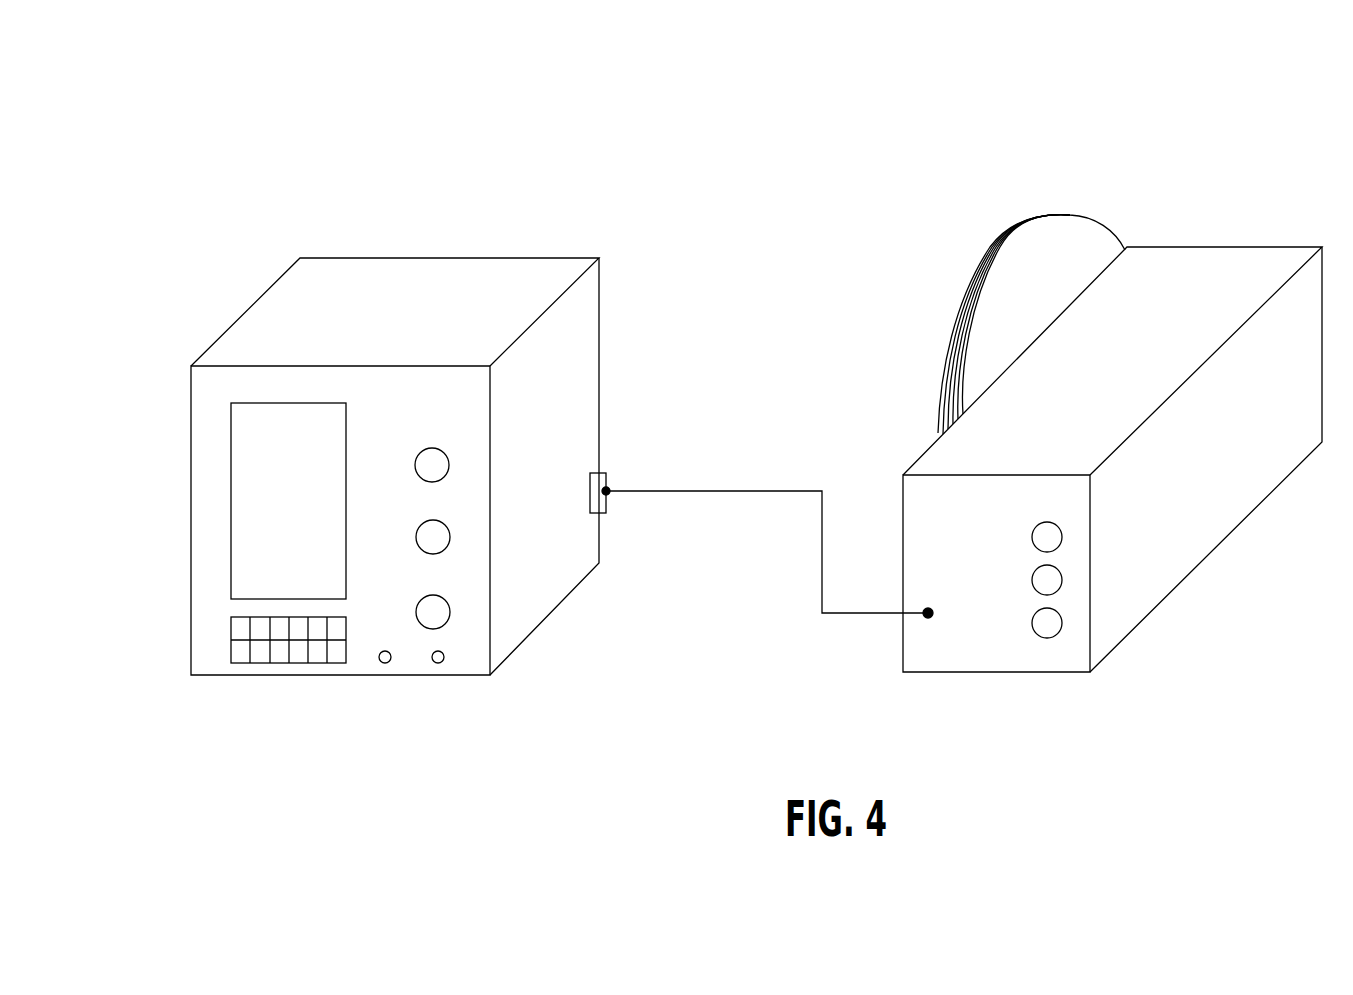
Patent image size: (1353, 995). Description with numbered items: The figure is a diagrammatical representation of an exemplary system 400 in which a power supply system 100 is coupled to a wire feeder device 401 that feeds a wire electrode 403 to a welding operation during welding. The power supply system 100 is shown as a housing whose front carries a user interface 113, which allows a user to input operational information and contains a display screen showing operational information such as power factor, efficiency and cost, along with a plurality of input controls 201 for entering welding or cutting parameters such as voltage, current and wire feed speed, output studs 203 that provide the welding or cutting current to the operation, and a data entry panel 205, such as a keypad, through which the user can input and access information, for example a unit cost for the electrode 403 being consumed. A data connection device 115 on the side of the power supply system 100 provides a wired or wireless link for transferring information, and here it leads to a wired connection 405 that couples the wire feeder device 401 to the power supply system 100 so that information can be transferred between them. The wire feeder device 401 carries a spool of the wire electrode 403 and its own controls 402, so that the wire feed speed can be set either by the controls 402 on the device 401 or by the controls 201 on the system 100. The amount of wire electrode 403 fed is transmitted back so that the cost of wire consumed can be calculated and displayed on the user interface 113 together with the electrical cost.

The system 400 is at (864, 86).
The power supply system 100 is at (584, 318).
The user interface 113 is at (231, 559).
The data connection device 115 is at (606, 478).
The input controls 201 is at (450, 530).
The output studs 203 is at (440, 663).
The data entry panel 205 is at (262, 650).
The wire feeder device 401 is at (1192, 500).
The controls 402 is at (1034, 632).
The wire electrode 403 is at (948, 326).
The wired connection 405 is at (747, 491).